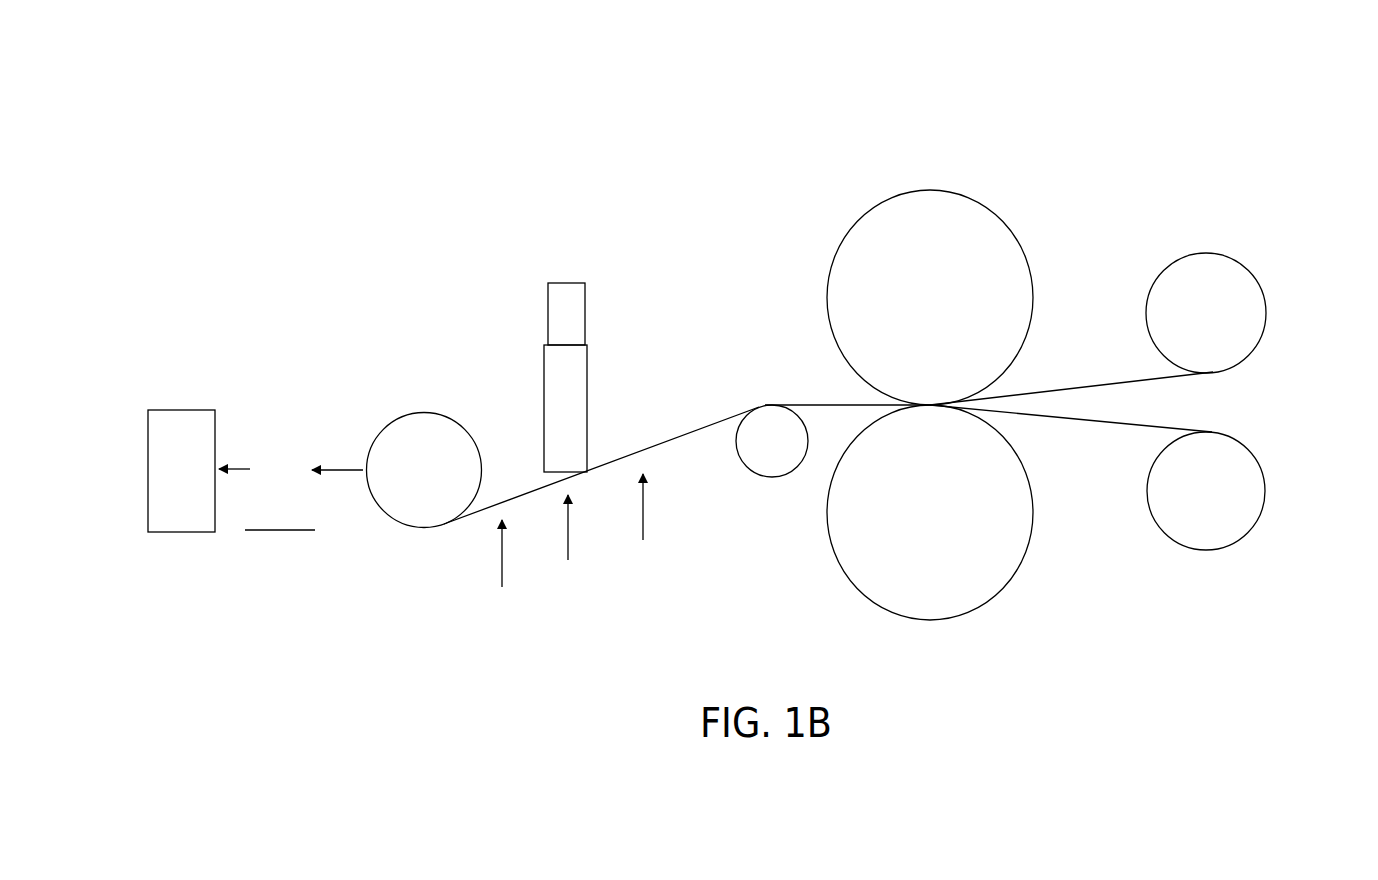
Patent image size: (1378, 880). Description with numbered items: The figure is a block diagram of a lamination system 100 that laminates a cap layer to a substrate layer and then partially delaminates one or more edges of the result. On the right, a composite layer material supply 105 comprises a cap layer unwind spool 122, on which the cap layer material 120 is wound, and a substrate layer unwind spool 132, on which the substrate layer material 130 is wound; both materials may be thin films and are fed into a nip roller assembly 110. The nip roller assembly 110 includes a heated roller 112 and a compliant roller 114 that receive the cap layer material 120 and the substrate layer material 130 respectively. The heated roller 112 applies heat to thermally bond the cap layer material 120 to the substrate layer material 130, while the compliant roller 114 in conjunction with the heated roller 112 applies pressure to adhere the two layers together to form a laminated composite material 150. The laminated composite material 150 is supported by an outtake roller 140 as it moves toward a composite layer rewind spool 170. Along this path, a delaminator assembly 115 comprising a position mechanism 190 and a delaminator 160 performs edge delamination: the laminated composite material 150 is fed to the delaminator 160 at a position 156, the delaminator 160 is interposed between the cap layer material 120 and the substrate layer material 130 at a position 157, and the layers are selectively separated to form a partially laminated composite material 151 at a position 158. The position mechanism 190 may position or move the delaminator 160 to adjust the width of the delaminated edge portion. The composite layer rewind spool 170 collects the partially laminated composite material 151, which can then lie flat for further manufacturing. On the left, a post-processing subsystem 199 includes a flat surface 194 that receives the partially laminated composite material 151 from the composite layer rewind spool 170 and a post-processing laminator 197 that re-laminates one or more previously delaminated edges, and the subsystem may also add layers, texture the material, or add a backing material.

The lamination system 100 is at (1300, 150).
The composite layer material supply 105 is at (1142, 146).
The nip roller assembly 110 is at (825, 146).
The heated roller 112 is at (1022, 245).
The compliant roller 114 is at (1004, 592).
The delaminator assembly 115 is at (525, 259).
The cap layer material 120 is at (1086, 386).
The cap layer unwind spool 122 is at (1205, 253).
The substrate layer material 130 is at (1085, 420).
The substrate layer unwind spool 132 is at (1205, 550).
The outtake roller 140 is at (772, 478).
The laminated composite material 150 is at (805, 404).
The partially laminated composite material 151 is at (520, 497).
The position 156 is at (647, 525).
The position 157 is at (570, 545).
The position 158 is at (505, 571).
The delaminator 160 is at (588, 393).
The composite layer rewind spool 170 is at (443, 414).
The position mechanism 190 is at (548, 312).
The flat surface 194 is at (277, 535).
The post-processing laminator 197 is at (180, 410).
The post-processing subsystem 199 is at (148, 299).